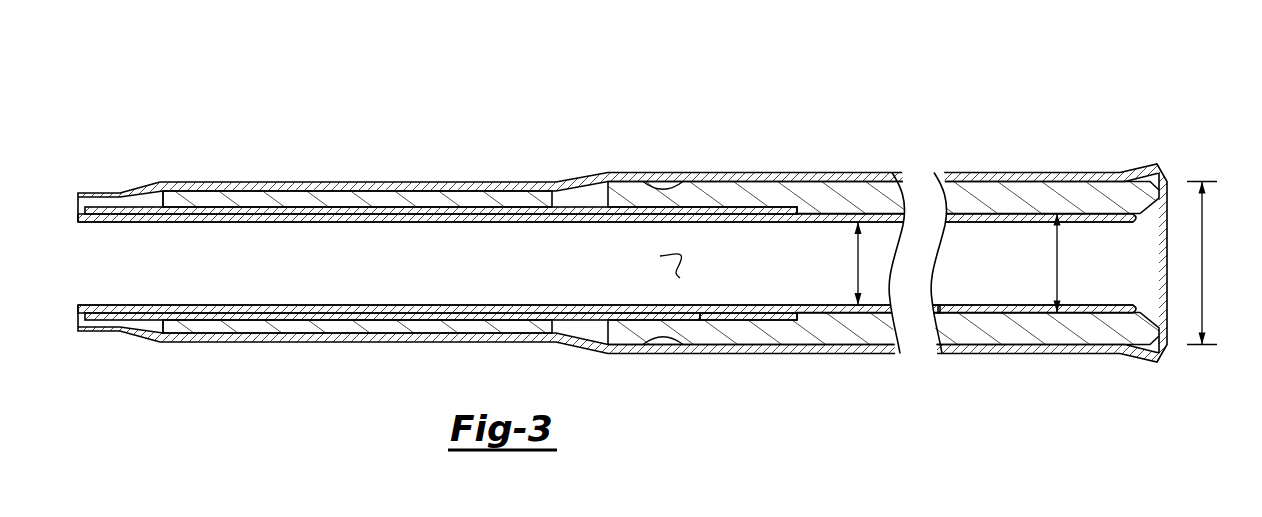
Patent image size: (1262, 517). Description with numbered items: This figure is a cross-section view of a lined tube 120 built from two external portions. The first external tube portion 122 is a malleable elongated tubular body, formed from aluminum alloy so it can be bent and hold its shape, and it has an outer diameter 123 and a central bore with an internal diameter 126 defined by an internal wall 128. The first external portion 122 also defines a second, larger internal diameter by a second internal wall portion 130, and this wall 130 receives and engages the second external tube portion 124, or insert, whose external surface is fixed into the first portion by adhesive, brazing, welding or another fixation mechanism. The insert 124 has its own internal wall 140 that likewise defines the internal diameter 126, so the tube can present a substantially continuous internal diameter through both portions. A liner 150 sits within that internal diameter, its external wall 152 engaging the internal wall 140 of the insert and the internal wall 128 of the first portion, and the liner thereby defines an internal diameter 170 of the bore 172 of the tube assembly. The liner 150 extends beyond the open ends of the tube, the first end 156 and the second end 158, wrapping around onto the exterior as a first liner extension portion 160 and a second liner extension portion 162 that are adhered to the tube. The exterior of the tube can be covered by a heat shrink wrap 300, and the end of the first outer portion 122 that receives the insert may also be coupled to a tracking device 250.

The tube 120 is at (766, 102).
The first external tube portion 122 is at (835, 187).
The outer diameter 123 is at (1203, 265).
The second external tube portion 124 is at (438, 210).
The internal diameter 126 is at (1058, 263).
The internal wall 128 is at (1000, 304).
The second internal wall portion 130 is at (752, 320).
The internal wall 140 is at (330, 318).
The liner 150 is at (128, 230).
The external wall 152 is at (248, 212).
The first end 156 is at (68, 188).
The second end 158 is at (1171, 357).
The first liner extension portion 160 is at (99, 205).
The second liner extension portion 162 is at (1169, 191).
The internal diameter 170 is at (857, 262).
The bore 172 is at (660, 256).
The tracking device 250 is at (347, 200).
The heat shrink wrap 300 is at (509, 183).